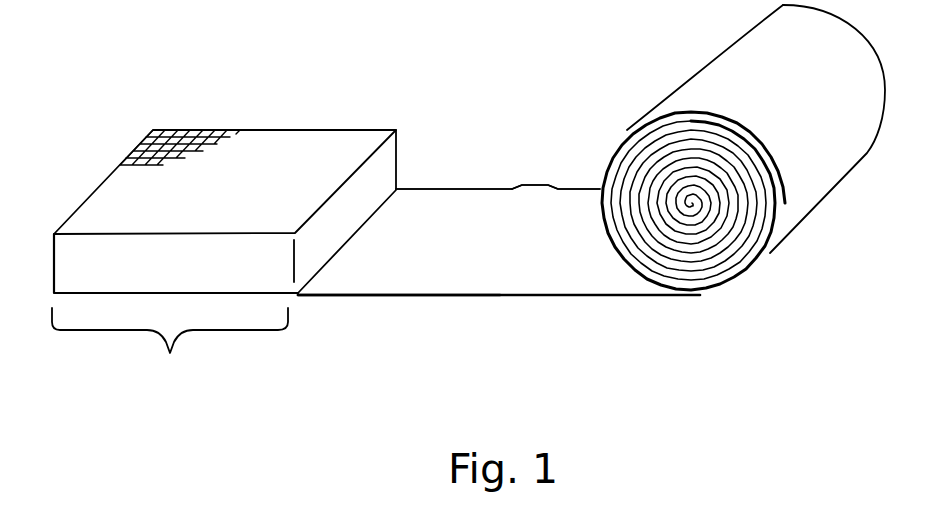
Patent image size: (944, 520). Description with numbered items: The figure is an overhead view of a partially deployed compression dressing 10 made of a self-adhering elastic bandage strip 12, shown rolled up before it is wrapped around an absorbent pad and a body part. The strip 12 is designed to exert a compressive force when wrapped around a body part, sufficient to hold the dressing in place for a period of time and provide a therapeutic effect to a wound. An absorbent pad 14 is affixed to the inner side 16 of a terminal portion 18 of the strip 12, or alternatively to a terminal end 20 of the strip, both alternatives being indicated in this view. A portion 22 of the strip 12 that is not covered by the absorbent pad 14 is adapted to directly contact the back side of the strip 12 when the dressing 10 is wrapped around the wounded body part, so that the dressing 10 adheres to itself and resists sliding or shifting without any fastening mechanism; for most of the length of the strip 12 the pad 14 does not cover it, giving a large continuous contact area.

The dressing 10 is at (606, 407).
The self-adhering elastic bandage strip 12 is at (500, 200).
The absorbent pad 14 is at (270, 140).
The inner side 16 is at (399, 275).
The terminal portion 18 is at (170, 353).
The terminal end 20 is at (387, 178).
The portion of strip 22 is at (562, 200).